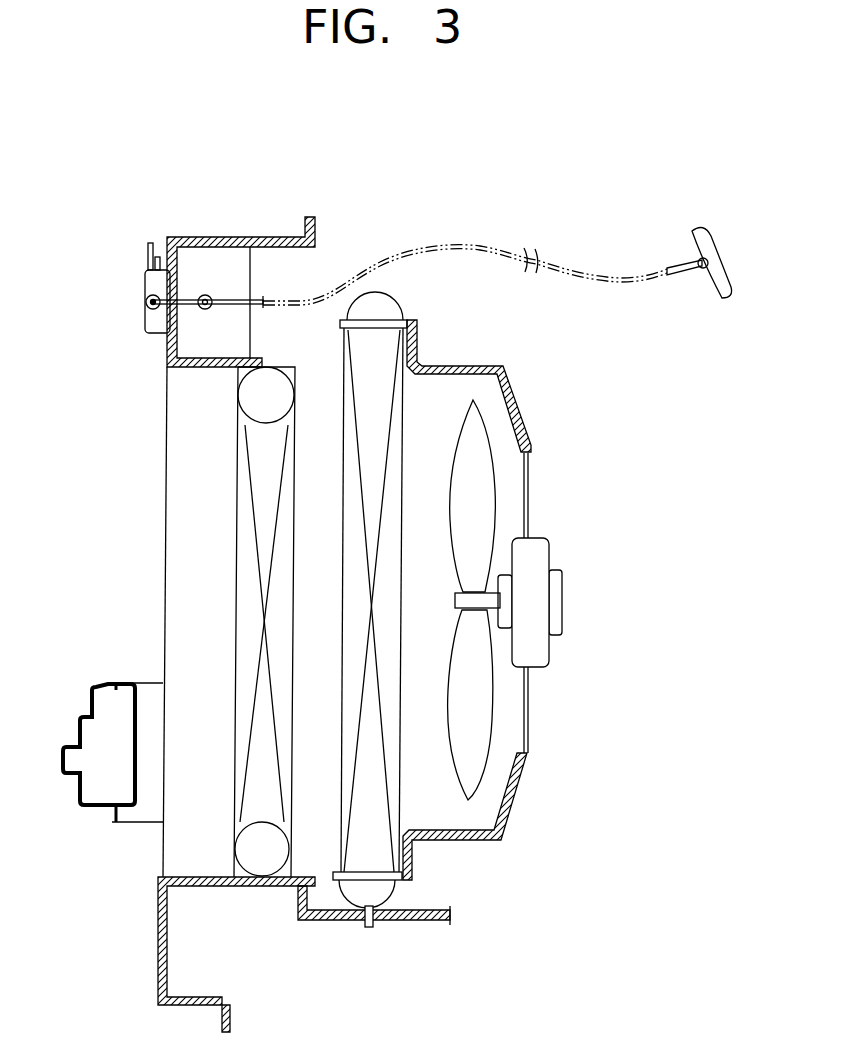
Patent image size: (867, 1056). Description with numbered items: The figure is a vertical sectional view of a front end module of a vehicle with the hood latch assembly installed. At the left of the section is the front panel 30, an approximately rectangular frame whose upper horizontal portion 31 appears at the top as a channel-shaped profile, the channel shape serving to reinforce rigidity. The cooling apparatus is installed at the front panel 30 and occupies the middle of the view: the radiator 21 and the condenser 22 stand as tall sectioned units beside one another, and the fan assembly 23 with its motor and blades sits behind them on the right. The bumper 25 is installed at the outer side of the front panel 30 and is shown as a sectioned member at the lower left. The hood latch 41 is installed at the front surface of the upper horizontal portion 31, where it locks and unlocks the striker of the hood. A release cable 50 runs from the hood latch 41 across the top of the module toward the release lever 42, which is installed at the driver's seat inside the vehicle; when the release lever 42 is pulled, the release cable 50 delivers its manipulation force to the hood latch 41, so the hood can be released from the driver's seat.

The radiator 21 is at (352, 703).
The condenser 22 is at (245, 596).
The fan assembly 23 is at (509, 514).
The bumper 25 is at (82, 718).
The front panel 30 is at (152, 213).
The upper horizontal portion 31 is at (263, 240).
The hood latch 41 is at (148, 283).
The release lever 42 is at (717, 258).
The release cable 50 is at (490, 248).